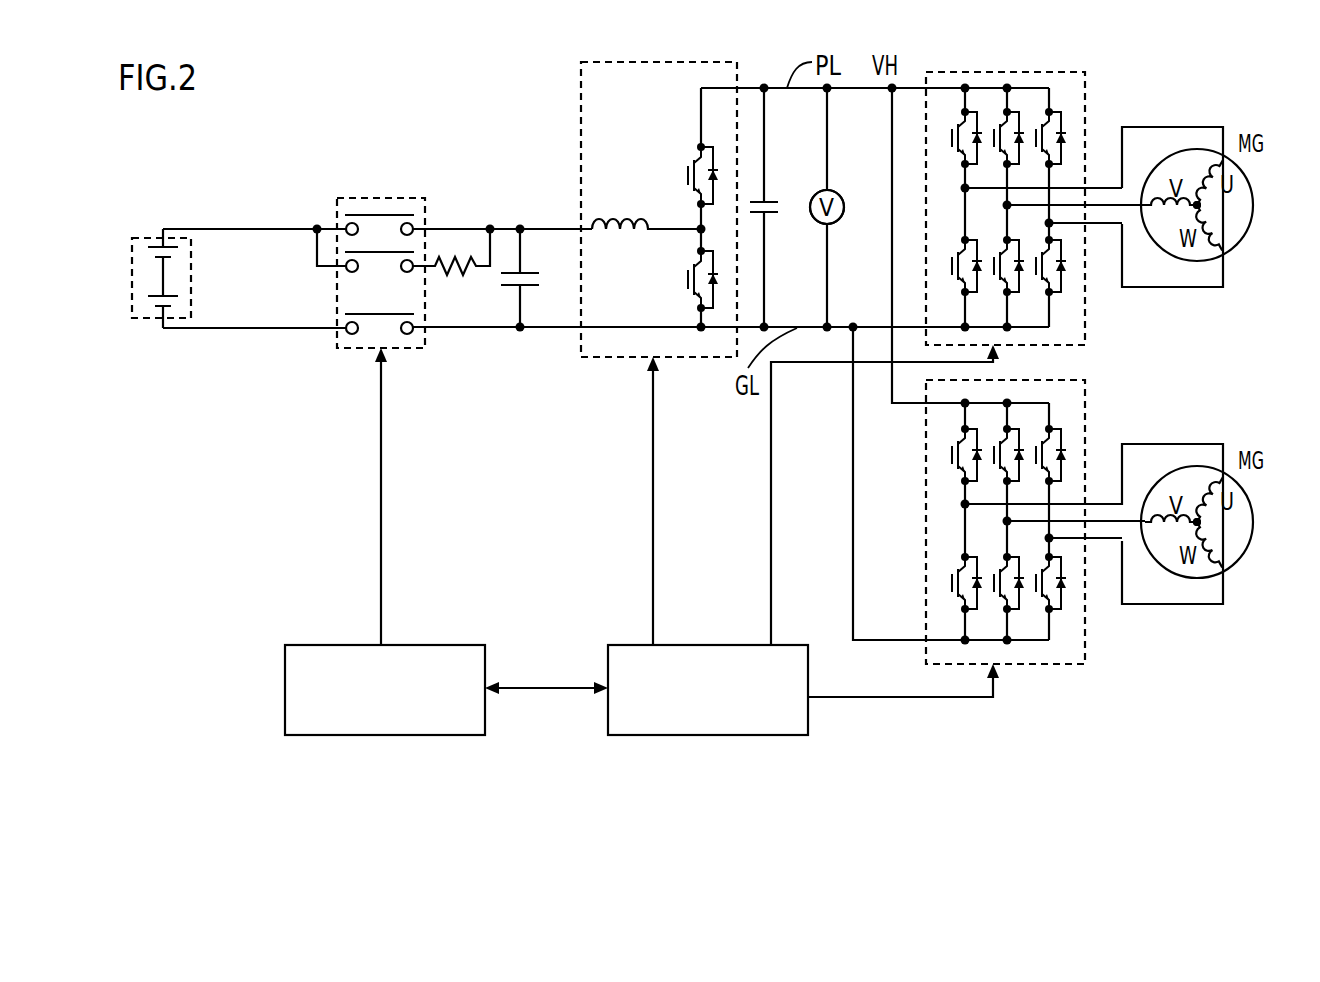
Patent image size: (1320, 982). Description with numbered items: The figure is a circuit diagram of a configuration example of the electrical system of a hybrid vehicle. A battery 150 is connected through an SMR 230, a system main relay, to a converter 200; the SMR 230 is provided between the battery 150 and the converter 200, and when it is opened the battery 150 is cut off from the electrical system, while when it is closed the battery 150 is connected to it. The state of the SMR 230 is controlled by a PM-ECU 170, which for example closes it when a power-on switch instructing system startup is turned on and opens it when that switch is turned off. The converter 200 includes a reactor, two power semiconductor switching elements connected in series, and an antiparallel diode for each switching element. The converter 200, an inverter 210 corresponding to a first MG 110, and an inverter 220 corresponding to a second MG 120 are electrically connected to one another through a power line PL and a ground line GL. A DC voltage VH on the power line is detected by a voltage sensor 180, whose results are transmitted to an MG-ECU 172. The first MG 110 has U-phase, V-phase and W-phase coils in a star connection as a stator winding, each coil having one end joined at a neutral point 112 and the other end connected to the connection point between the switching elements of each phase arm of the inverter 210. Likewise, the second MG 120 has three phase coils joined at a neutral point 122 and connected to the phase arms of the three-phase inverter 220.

The first MG 110 is at (1242, 240).
The neutral point 112 is at (1197, 205).
The second MG 120 is at (1242, 556).
The neutral point 122 is at (1197, 522).
The battery 150 is at (147, 238).
The PM-ECU 170 is at (315, 645).
The MG-ECU 172 is at (631, 645).
The voltage sensor 180 is at (838, 222).
The converter 200 is at (605, 357).
The inverter 210 is at (1085, 298).
The inverter 220 is at (1085, 612).
The SMR 230 is at (377, 198).